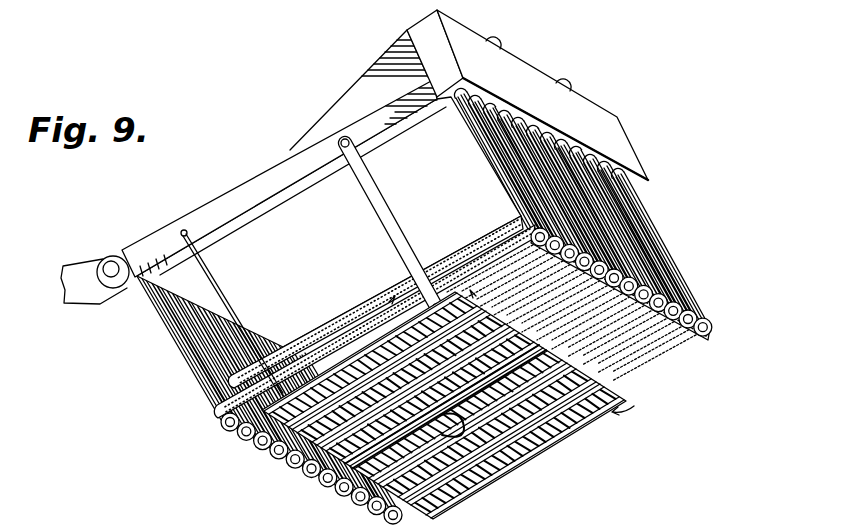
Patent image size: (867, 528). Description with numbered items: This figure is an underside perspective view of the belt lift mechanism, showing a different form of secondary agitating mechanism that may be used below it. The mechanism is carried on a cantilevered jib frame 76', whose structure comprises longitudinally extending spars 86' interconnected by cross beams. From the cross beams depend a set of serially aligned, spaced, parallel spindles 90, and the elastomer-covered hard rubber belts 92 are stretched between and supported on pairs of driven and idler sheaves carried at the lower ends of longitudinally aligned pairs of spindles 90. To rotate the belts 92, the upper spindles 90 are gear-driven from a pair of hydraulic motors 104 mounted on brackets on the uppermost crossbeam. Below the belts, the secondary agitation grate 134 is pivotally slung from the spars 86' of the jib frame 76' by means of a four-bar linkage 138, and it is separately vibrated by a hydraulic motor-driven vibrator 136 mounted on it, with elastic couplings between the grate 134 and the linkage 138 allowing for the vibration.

The jib frame 76' is at (249, 167).
The spars 86' is at (330, 221).
The hydraulic motors 104 is at (562, 76).
The spindles 90 is at (212, 380).
The belts 92 is at (678, 293).
The secondary agitation grate 134 is at (556, 451).
The vibrator 136 is at (464, 428).
The four-bar linkage 138 is at (402, 228).